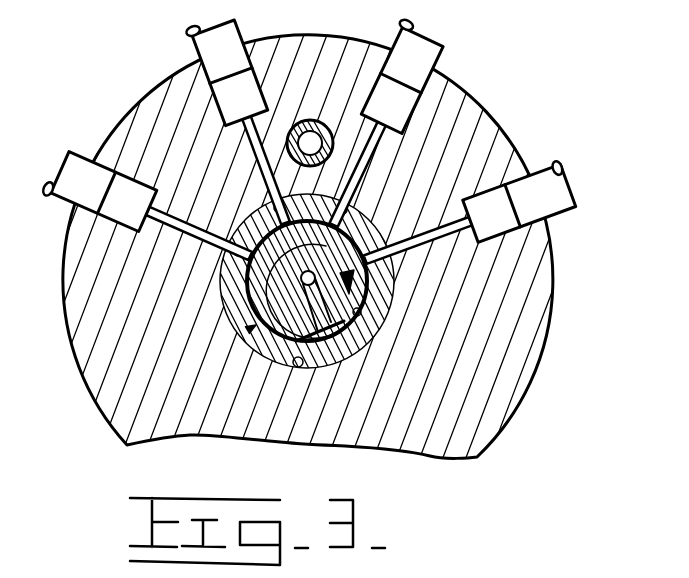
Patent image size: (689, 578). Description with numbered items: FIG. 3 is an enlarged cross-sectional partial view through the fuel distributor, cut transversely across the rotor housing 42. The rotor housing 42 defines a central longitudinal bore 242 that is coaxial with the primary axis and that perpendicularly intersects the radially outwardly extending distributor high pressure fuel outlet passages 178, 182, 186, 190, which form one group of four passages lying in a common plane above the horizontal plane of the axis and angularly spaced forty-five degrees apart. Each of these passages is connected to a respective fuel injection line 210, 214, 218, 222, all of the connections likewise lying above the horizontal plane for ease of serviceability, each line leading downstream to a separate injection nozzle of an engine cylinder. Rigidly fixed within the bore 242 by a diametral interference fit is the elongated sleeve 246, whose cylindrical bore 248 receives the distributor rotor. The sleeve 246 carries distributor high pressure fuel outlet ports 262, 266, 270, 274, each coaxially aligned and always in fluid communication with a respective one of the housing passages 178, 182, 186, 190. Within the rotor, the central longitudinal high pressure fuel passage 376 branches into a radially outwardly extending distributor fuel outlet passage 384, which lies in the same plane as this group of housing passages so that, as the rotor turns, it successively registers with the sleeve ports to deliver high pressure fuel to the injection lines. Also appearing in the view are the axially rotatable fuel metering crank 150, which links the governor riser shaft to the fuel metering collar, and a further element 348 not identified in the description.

The rotor housing 42 is at (497, 303).
The fuel metering crank 150 is at (327, 124).
The distributor high pressure fuel outlet passage 178 is at (186, 232).
The distributor high pressure fuel outlet passage 182 is at (254, 152).
The distributor high pressure fuel outlet passage 186 is at (371, 143).
The distributor high pressure fuel outlet passage 190 is at (405, 247).
The fuel injection line 210 is at (84, 157).
The fuel injection line 214 is at (194, 44).
The fuel injection line 218 is at (439, 58).
The fuel injection line 222 is at (531, 175).
The central longitudinal bore 242 is at (297, 367).
The elongated sleeve 246 is at (372, 312).
The cylindrical bore 248 is at (245, 356).
The distributor high pressure fuel outlet port 262 is at (222, 281).
The distributor high pressure fuel outlet port 266 is at (274, 209).
The distributor high pressure fuel outlet port 270 is at (350, 206).
The distributor high pressure fuel outlet port 274 is at (392, 284).
The direction arrow 348 is at (248, 330).
The central longitudinal high pressure fuel passage 376 is at (301, 282).
The distributor high pressure fuel outlet passage 384 is at (350, 351).